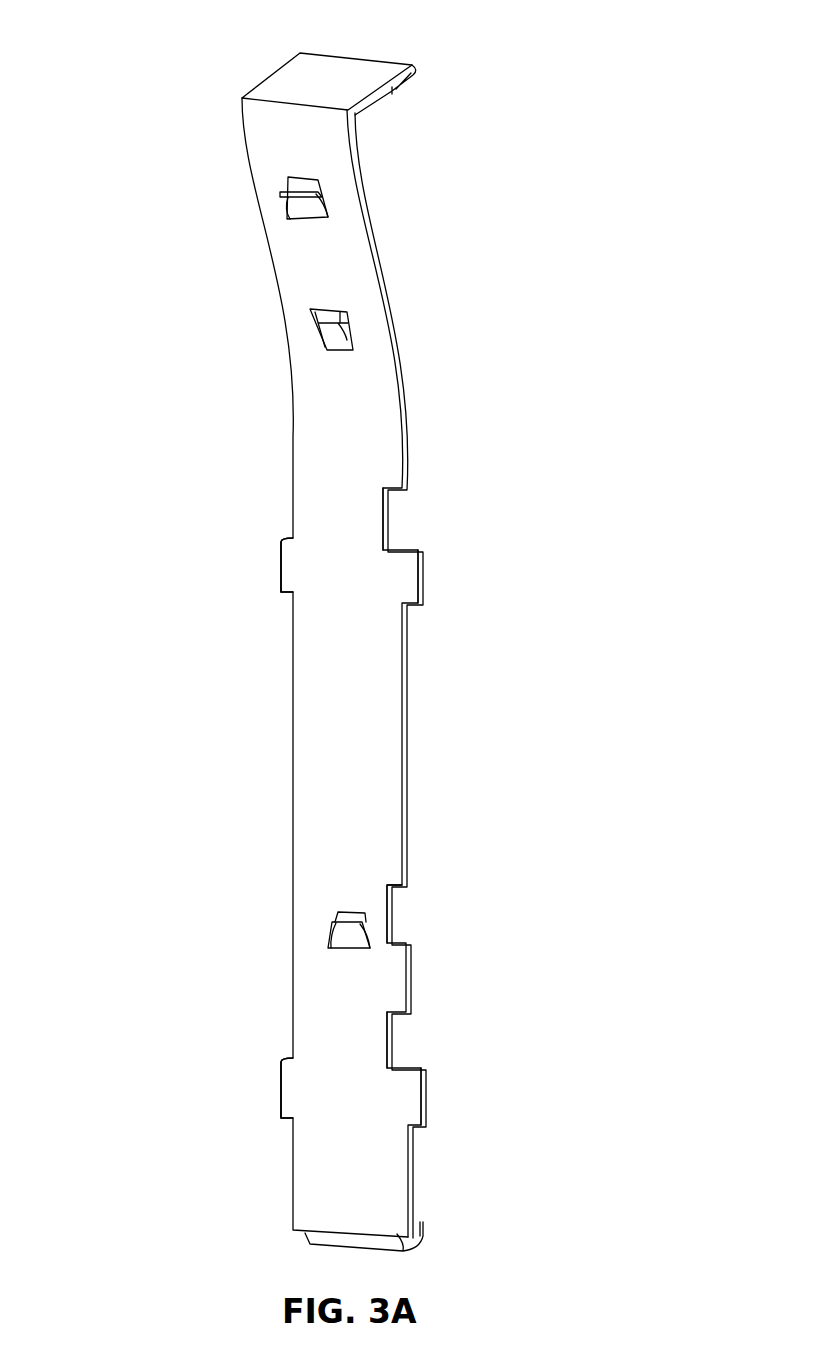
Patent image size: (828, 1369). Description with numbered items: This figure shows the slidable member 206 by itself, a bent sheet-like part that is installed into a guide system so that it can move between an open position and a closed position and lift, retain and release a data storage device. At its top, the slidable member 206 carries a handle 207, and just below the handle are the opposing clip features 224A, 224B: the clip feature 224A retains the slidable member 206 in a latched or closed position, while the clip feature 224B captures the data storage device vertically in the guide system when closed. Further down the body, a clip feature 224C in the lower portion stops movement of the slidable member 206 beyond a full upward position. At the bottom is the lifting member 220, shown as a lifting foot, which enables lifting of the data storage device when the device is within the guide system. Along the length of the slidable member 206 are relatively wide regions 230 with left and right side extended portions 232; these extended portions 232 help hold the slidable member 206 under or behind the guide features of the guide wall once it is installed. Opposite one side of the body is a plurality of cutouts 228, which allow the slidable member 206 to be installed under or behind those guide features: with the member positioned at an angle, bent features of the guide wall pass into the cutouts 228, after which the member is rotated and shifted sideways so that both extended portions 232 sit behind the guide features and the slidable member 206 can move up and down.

The slidable member 206 is at (563, 136).
The handle 207 is at (298, 80).
The lifting member 220 is at (412, 1218).
The clip feature 224A is at (287, 210).
The clip feature 224B is at (343, 330).
The clip feature 224C is at (332, 942).
The cutouts 228 is at (399, 518).
The relatively wide regions 230 is at (264, 554).
The extended portions 232 is at (287, 573).